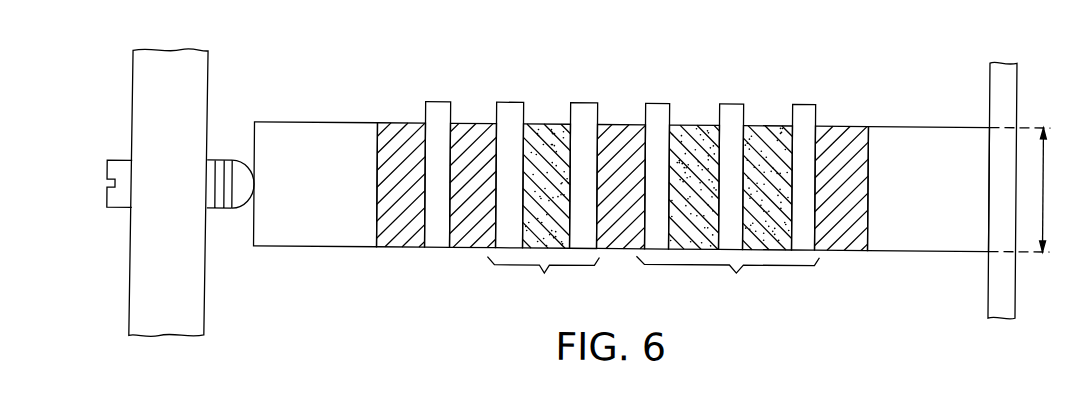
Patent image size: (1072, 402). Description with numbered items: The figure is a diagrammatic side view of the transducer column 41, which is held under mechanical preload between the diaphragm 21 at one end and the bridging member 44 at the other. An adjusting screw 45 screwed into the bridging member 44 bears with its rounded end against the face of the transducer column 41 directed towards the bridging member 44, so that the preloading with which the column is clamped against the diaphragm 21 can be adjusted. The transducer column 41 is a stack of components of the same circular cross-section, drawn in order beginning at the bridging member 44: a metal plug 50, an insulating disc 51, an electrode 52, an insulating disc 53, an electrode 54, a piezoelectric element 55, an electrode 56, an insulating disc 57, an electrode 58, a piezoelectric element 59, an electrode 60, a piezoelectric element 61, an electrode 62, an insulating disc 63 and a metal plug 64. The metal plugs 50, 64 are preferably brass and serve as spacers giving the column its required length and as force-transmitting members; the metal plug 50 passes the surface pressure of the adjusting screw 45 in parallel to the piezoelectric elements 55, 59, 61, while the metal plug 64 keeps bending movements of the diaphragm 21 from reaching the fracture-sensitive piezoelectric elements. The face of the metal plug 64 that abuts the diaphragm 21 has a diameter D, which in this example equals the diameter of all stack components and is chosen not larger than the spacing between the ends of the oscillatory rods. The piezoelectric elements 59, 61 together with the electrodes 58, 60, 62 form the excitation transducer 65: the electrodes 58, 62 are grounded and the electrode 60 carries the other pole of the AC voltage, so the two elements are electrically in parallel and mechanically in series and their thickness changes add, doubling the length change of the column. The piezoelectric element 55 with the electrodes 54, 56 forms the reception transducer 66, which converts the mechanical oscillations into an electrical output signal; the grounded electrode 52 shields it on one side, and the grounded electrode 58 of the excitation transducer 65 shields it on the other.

The diaphragm 21 is at (1010, 97).
The transducer column 41 is at (621, 178).
The bridging member 44 is at (200, 96).
The adjusting screw 45 is at (118, 166).
The metal plug 50 is at (318, 133).
The insulating disc 51 is at (403, 138).
The electrode 52 is at (440, 112).
The insulating disc 53 is at (473, 133).
The electrode 54 is at (513, 112).
The piezoelectric element 55 is at (550, 134).
The electrode 56 is at (584, 112).
The insulating disc 57 is at (619, 135).
The electrode 58 is at (658, 112).
The piezoelectric element 59 is at (694, 135).
The electrode 60 is at (735, 112).
The piezoelectric element 61 is at (766, 135).
The electrode 62 is at (805, 112).
The insulating disc 63 is at (846, 135).
The metal plug 64 is at (921, 140).
The excitation transducer 65 is at (727, 281).
The reception transducer 66 is at (543, 281).
The diameter D is at (1044, 183).